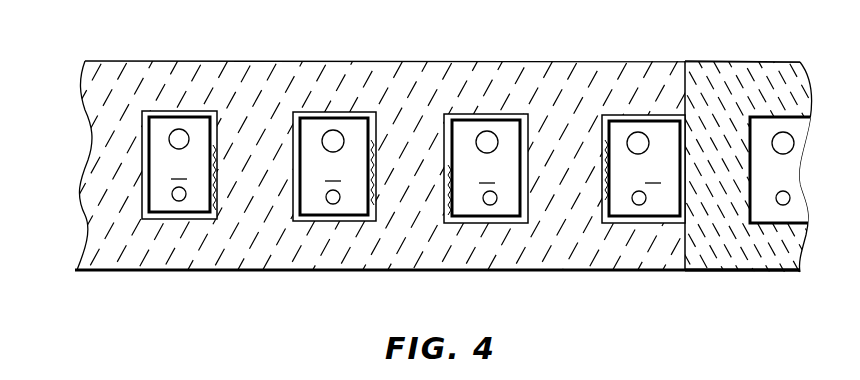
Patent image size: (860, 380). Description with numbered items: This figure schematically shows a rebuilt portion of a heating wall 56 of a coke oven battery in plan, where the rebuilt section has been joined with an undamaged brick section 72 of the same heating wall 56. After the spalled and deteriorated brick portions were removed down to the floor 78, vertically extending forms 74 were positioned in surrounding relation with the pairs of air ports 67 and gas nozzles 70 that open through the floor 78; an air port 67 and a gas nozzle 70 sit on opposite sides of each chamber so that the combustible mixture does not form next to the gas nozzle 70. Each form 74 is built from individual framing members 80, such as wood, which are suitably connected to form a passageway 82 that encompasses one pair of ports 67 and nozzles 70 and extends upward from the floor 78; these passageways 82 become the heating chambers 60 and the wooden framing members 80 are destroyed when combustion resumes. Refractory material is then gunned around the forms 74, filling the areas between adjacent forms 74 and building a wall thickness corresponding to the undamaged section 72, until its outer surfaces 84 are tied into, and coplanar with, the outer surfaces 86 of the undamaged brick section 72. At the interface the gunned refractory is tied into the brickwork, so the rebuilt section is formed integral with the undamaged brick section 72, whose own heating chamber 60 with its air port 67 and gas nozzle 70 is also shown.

The heating wall 56 is at (528, 60).
The heating chamber 60 is at (785, 168).
The air port 67 is at (170, 136).
The gas nozzle 70 is at (179, 201).
The undamaged brick section 72 is at (720, 84).
The form 74 is at (186, 108).
The floor 78 is at (416, 171).
The framing member 80 is at (213, 111).
The passageway 82 is at (153, 189).
The outer surface of rebuilt section 84 is at (493, 62).
The outer surface of undamaged brick section 86 is at (775, 62).